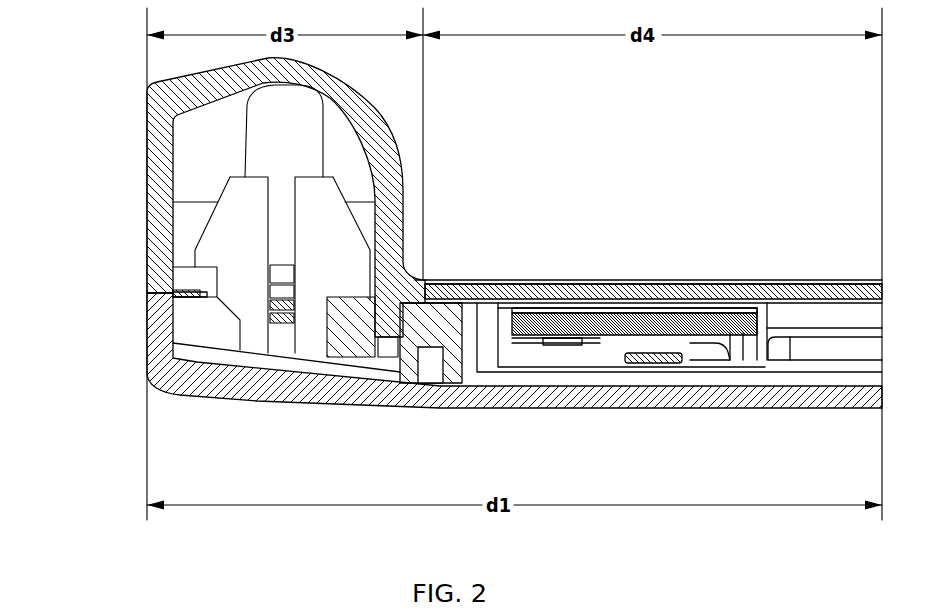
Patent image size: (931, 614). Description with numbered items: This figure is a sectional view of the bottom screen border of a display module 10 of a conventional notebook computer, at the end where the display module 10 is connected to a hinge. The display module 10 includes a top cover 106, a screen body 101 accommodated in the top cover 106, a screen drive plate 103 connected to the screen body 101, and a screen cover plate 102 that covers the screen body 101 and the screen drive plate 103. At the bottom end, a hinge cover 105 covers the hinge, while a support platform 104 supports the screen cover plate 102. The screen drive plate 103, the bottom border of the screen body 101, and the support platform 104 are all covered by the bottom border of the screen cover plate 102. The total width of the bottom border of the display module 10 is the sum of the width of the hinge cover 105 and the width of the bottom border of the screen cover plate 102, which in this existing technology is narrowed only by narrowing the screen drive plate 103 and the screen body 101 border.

The display module 10 is at (550, 178).
The screen body 101 is at (815, 282).
The screen cover plate 102 is at (483, 280).
The screen drive plate 103 is at (615, 325).
The support platform 104 is at (423, 328).
The hinge cover 105 is at (375, 108).
The top cover 106 is at (147, 338).